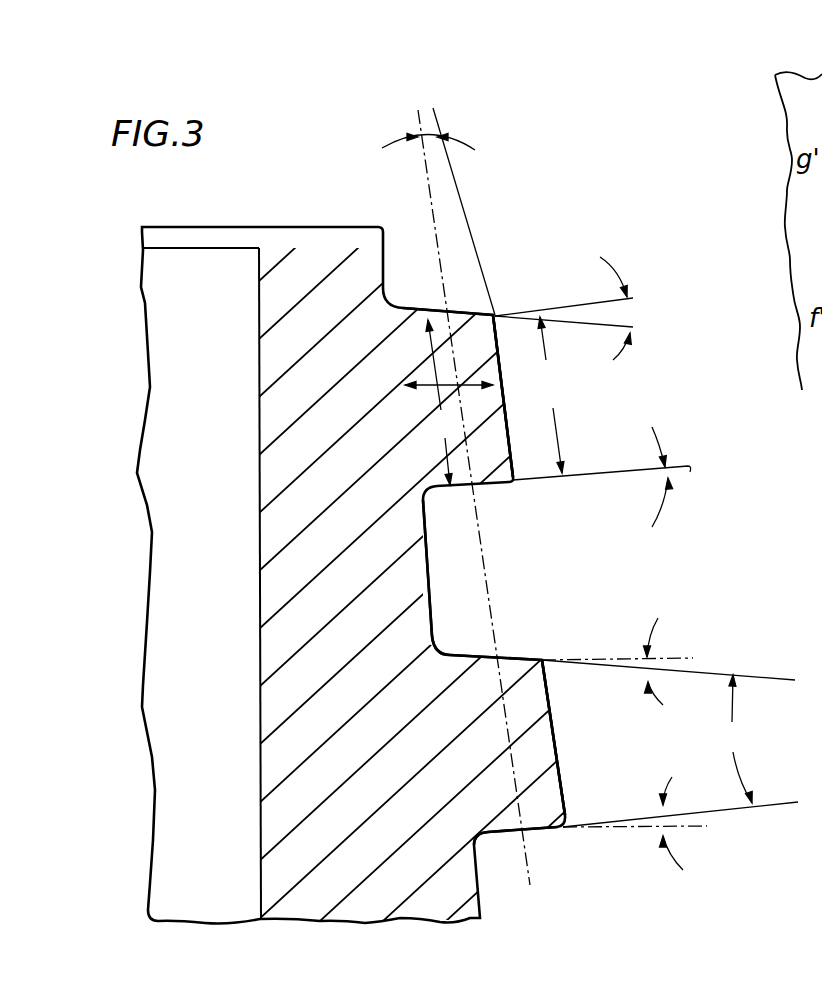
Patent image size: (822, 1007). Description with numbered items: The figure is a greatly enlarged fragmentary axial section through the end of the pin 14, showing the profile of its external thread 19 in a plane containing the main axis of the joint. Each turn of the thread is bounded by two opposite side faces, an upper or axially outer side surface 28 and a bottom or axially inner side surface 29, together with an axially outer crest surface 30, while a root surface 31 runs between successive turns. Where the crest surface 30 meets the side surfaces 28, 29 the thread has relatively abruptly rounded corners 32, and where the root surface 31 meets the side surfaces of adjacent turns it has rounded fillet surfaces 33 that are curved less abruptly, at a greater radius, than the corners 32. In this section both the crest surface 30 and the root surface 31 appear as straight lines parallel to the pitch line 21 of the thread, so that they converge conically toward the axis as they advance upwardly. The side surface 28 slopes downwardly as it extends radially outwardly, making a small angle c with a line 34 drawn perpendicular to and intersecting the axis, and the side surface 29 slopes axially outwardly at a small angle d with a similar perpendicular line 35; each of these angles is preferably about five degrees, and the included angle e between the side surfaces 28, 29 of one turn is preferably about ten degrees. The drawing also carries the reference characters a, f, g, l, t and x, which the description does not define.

The pin 14 is at (262, 470).
The external thread 19 is at (505, 320).
The pitch line 21 is at (442, 278).
The upper side surface 28 is at (512, 657).
The bottom side surface 29 is at (532, 834).
The crest surface 30 is at (560, 752).
The root surface 31 is at (435, 577).
The rounded corners 32 is at (497, 328).
The rounded fillet surfaces 33 is at (447, 650).
The perpendicular reference line 34 is at (603, 657).
The perpendicular reference line 35 is at (642, 830).
The taper angle a is at (435, 125).
The side surface angle c is at (655, 664).
The side surface angle d is at (667, 823).
The included angle e is at (738, 739).
The crest angle f is at (633, 313).
The root angle g is at (690, 472).
The flank length l is at (551, 395).
The thread height t is at (439, 402).
The thread depth x is at (458, 383).